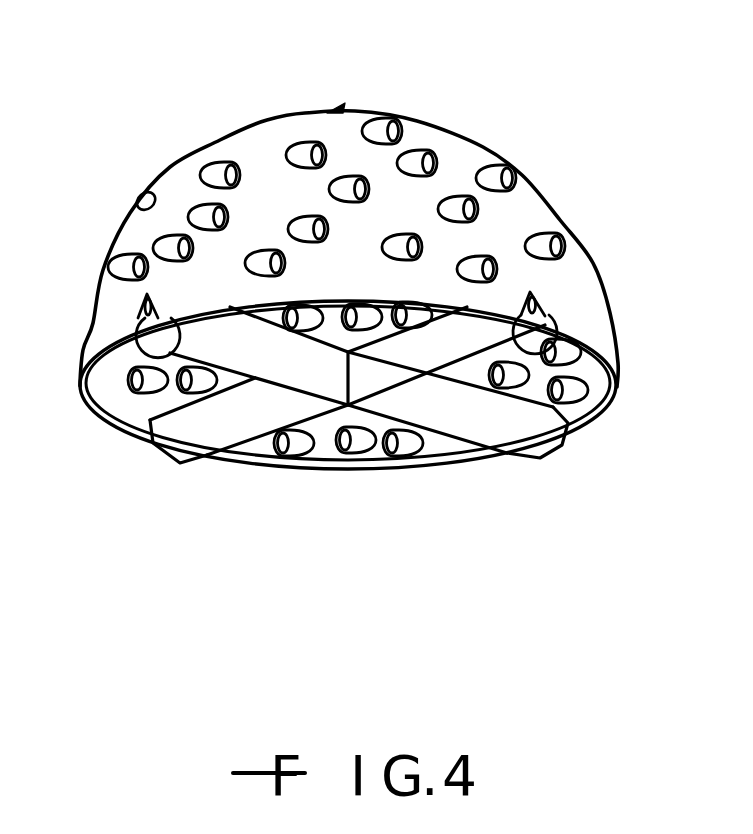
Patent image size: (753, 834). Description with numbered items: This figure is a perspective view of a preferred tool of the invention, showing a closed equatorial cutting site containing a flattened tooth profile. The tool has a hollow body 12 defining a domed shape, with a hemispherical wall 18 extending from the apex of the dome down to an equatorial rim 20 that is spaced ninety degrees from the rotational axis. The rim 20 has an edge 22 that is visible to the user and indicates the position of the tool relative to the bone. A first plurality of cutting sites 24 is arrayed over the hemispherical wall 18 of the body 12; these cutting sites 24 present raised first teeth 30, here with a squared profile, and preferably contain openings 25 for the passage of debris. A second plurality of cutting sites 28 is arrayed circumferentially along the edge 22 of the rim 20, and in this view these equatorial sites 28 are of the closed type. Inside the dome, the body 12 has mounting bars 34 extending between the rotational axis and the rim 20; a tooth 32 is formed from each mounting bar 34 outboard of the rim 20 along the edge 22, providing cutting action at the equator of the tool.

The hollow body 12 is at (197, 190).
The hemispherical wall 18 is at (257, 127).
The equatorial rim 20 is at (618, 382).
The edge 22 is at (585, 336).
The first plurality of cutting sites 24 is at (403, 133).
The openings 25 is at (226, 218).
The second plurality of cutting sites 28 is at (160, 308).
The first teeth 30 is at (381, 115).
The tooth 32 is at (140, 317).
The mounting bar 34 is at (458, 407).